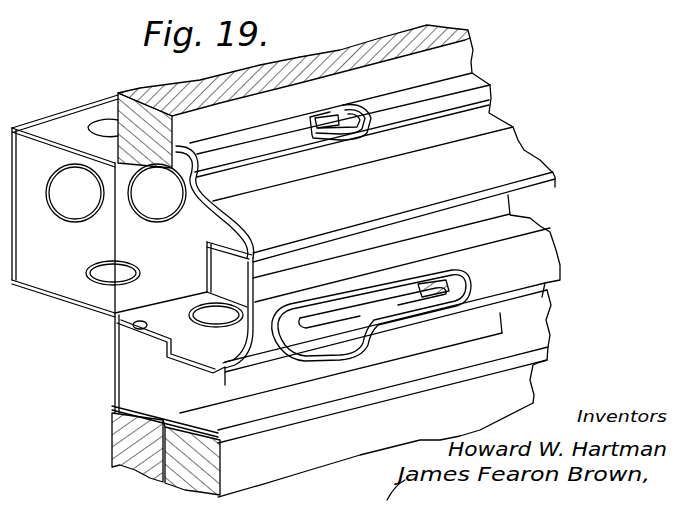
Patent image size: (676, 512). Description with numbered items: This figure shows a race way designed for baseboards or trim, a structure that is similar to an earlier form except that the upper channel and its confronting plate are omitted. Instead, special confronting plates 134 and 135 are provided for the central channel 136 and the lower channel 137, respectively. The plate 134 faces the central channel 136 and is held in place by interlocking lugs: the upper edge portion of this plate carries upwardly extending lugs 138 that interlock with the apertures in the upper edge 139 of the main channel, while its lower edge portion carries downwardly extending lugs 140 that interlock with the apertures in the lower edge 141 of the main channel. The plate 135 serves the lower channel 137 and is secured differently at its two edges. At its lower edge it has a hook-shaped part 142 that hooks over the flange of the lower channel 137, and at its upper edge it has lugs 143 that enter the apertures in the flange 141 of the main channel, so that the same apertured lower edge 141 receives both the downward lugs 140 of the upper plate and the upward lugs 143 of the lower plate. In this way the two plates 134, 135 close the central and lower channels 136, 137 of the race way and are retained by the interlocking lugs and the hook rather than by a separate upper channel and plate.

The confronting plate 134 is at (510, 155).
The confronting plate 135 is at (548, 347).
The central channel 136 is at (100, 310).
The lower channel 137 is at (113, 378).
The upwardly extending lugs 138 is at (340, 106).
The upper edge of the main channel 139 is at (312, 125).
The downwardly extending lugs 140 is at (430, 296).
The lower edge of the main channel 141 is at (168, 347).
The hook-shaped part 142 is at (115, 405).
The lugs 143 is at (332, 292).